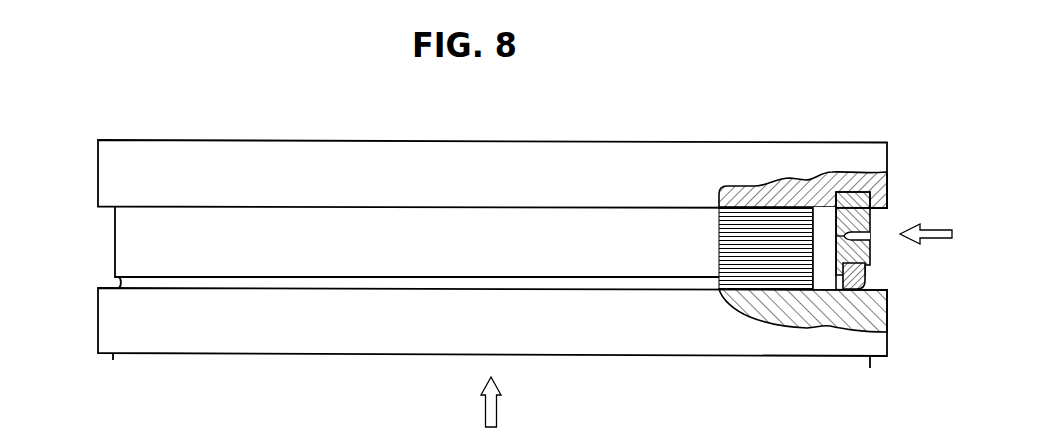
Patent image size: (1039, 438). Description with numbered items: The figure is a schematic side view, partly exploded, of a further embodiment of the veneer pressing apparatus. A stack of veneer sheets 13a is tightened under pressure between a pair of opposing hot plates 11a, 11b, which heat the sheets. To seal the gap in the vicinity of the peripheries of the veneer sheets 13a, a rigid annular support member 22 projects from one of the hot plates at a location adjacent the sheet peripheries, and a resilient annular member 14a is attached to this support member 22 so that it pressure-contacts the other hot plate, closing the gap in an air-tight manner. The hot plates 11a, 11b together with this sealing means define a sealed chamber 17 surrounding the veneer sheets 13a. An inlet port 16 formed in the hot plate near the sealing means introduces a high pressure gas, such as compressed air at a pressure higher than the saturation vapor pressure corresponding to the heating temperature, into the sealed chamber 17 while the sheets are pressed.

The hot plate 11a is at (658, 163).
The hot plate 11b is at (672, 328).
The veneer sheets 13a is at (770, 230).
The sealed chamber 17 is at (823, 220).
The inlet port 16 is at (873, 234).
The rigid annular support member 22 is at (871, 254).
The resilient annular member 14a is at (866, 283).